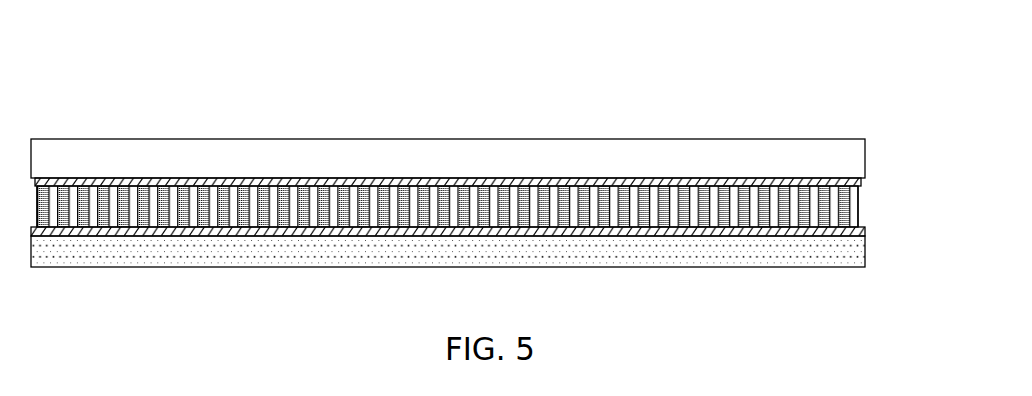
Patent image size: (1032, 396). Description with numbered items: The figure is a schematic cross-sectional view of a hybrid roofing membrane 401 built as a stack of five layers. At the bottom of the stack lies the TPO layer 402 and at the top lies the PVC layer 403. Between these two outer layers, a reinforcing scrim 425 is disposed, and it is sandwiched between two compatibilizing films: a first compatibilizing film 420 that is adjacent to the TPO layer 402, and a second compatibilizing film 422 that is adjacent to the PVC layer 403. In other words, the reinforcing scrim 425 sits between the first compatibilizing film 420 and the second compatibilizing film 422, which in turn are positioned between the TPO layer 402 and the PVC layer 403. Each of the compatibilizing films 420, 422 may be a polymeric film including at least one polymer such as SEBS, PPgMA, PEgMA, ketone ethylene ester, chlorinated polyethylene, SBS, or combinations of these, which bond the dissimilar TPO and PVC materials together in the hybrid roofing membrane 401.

The hybrid roofing membrane 401 is at (210, 78).
The TPO layer 402 is at (866, 262).
The PVC layer 403 is at (866, 141).
The first compatibilizing film 420 is at (866, 231).
The second compatibilizing film 422 is at (861, 182).
The reinforcing scrim 425 is at (842, 211).